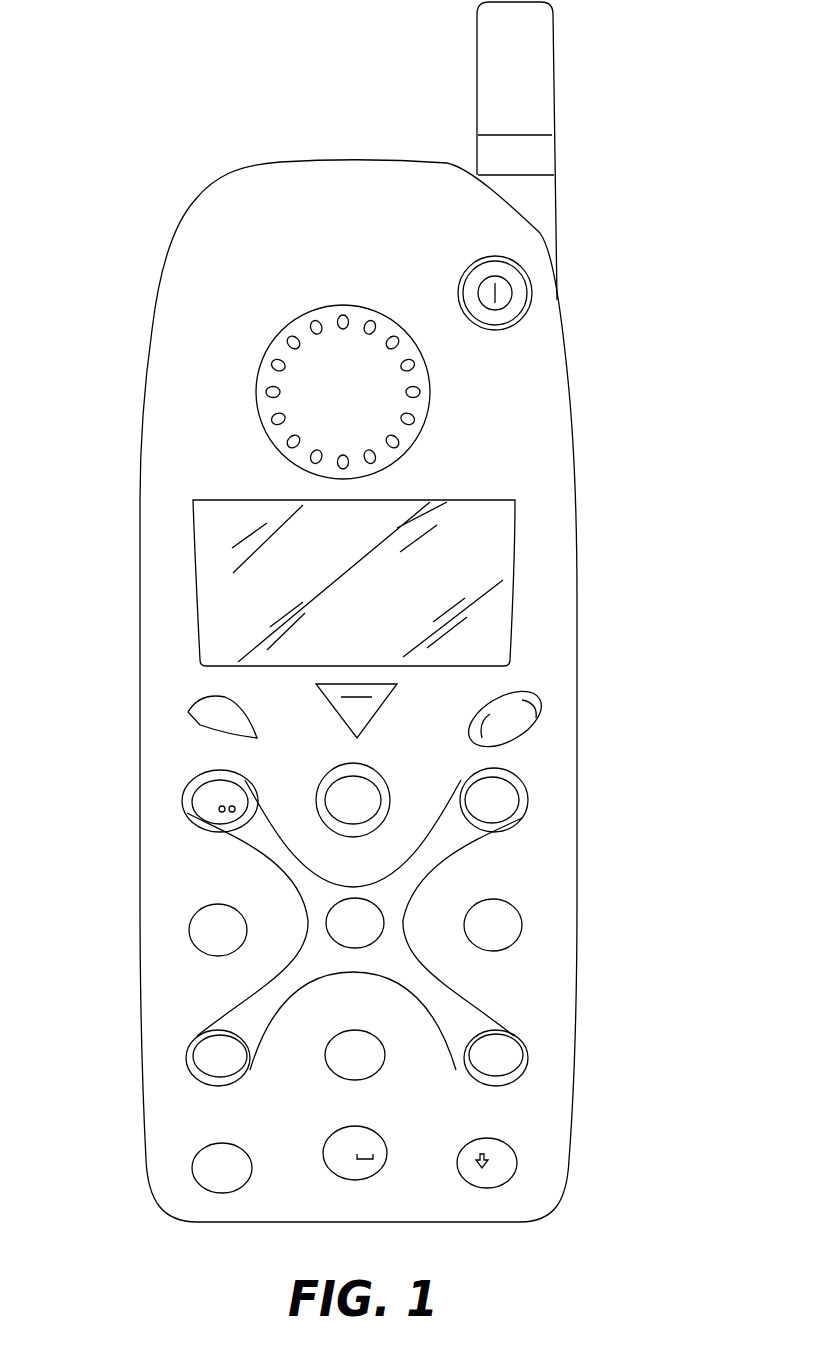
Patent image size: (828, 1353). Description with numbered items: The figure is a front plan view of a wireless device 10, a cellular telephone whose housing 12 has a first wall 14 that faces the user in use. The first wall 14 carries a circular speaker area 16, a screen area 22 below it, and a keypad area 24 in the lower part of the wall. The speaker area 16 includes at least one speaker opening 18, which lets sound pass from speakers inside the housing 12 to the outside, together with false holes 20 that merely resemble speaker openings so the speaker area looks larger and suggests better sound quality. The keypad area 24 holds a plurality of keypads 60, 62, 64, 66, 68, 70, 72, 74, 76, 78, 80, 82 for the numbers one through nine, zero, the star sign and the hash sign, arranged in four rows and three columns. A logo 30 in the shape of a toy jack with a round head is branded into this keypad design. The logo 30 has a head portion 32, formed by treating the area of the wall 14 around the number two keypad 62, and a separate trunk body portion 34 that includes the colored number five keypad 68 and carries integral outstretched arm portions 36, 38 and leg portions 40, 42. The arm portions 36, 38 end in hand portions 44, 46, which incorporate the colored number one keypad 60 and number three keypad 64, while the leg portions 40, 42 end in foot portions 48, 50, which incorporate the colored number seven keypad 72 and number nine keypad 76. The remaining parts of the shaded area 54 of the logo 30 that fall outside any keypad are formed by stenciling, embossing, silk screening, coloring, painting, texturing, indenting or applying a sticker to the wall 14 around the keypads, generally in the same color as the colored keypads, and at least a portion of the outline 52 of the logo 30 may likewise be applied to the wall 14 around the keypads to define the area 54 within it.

The wireless device 10 is at (648, 464).
The housing 12 is at (577, 665).
The first wall 14 is at (236, 327).
The speaker area 16 is at (333, 320).
The speaker opening 18 is at (427, 390).
The false holes 20 is at (380, 453).
The screen area 22 is at (193, 600).
The keypad area 24 is at (190, 923).
The logo 30 is at (515, 1030).
The head portion 32 is at (385, 827).
The trunk body portion 34 is at (392, 935).
The arm portion 36 is at (270, 862).
The arm portion 38 is at (432, 868).
The leg portion 40 is at (300, 981).
The leg portion 42 is at (425, 990).
The hand portion 44 is at (185, 815).
The hand portion 46 is at (525, 803).
The foot portion 48 is at (192, 1057).
The foot portion 50 is at (513, 1070).
The outline 52 is at (498, 1085).
The area 54 is at (420, 990).
The keypad 60 is at (232, 790).
The keypad 62 is at (366, 790).
The keypad 64 is at (505, 790).
The keypad 66 is at (221, 945).
The keypad 68 is at (327, 925).
The keypad 70 is at (504, 912).
The keypad 72 is at (228, 1068).
The keypad 74 is at (372, 1068).
The keypad 76 is at (504, 1042).
The keypad 78 is at (240, 1177).
The keypad 80 is at (365, 1168).
The keypad 82 is at (487, 1180).